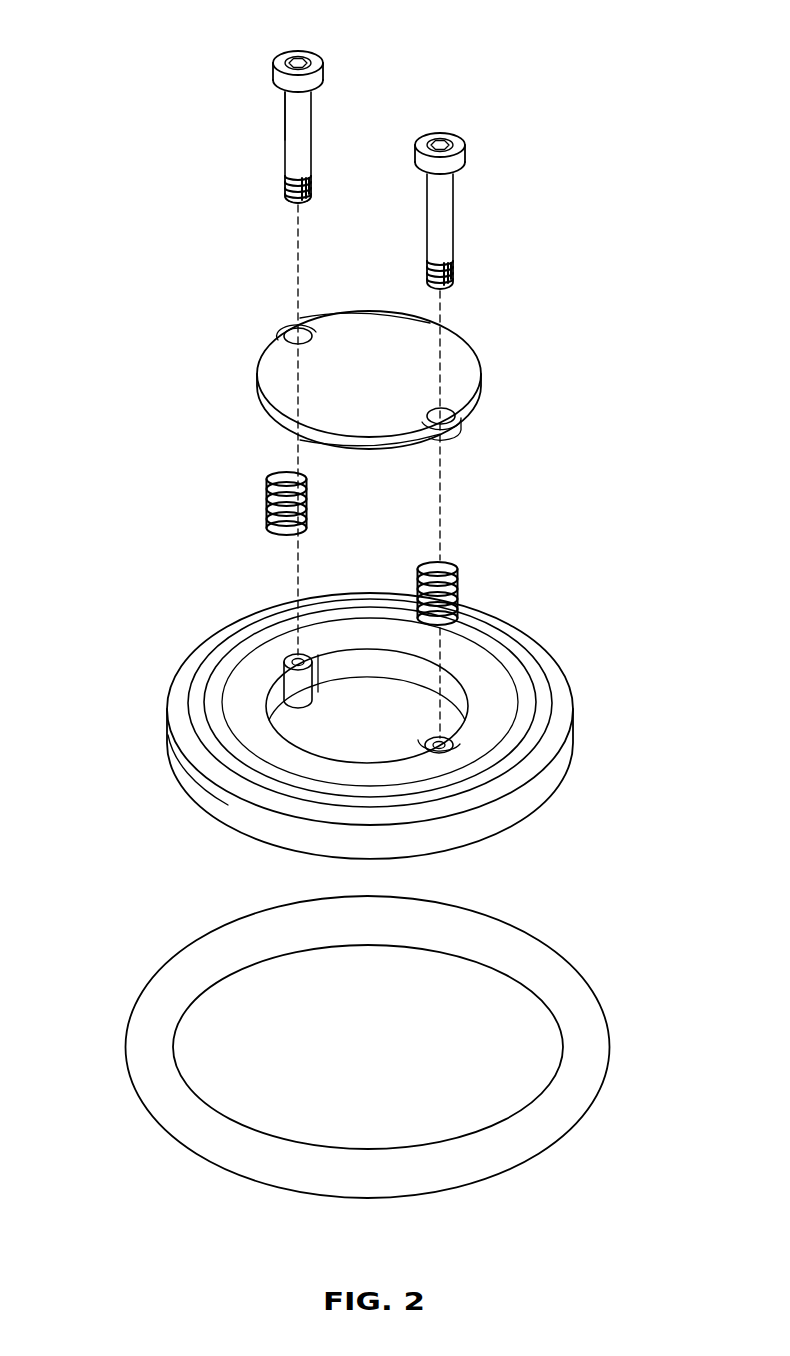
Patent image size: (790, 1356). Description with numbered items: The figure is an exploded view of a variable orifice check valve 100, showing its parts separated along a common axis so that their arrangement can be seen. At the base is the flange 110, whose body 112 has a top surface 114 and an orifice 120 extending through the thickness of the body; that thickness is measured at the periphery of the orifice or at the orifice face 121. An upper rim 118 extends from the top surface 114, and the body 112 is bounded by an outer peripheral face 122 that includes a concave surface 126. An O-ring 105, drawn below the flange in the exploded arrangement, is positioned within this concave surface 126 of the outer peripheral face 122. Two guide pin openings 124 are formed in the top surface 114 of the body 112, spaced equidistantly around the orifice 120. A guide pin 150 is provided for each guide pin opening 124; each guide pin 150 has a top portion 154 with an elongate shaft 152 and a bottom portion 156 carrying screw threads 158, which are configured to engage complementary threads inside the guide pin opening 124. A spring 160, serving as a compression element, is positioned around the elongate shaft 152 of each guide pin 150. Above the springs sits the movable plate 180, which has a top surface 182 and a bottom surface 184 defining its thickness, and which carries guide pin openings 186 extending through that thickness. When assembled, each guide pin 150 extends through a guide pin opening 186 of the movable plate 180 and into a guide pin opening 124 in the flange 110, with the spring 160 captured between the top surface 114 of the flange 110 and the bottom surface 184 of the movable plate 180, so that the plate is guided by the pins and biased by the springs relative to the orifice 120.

The variable orifice check valve 100 is at (157, 25).
The O-ring 105 is at (607, 1015).
The flange 110 is at (133, 698).
The body 112 is at (573, 705).
The top surface 114 is at (508, 677).
The upper rim 118 is at (502, 635).
The orifice 120 is at (408, 750).
The orifice face 121 is at (345, 665).
The outer peripheral face 122 is at (168, 757).
The guide pin opening 124 is at (293, 658).
The concave surface 126 is at (568, 743).
The guide pin 150 is at (310, 127).
The elongate shaft 152 is at (295, 142).
The top portion 154 is at (262, 144).
The bottom portion 156 is at (262, 194).
The screw threads 158 is at (312, 193).
The spring 160 is at (267, 502).
The movable plate 180 is at (480, 360).
The top surface 182 is at (372, 322).
The bottom surface 184 is at (368, 450).
The guide pin opening 186 is at (312, 340).